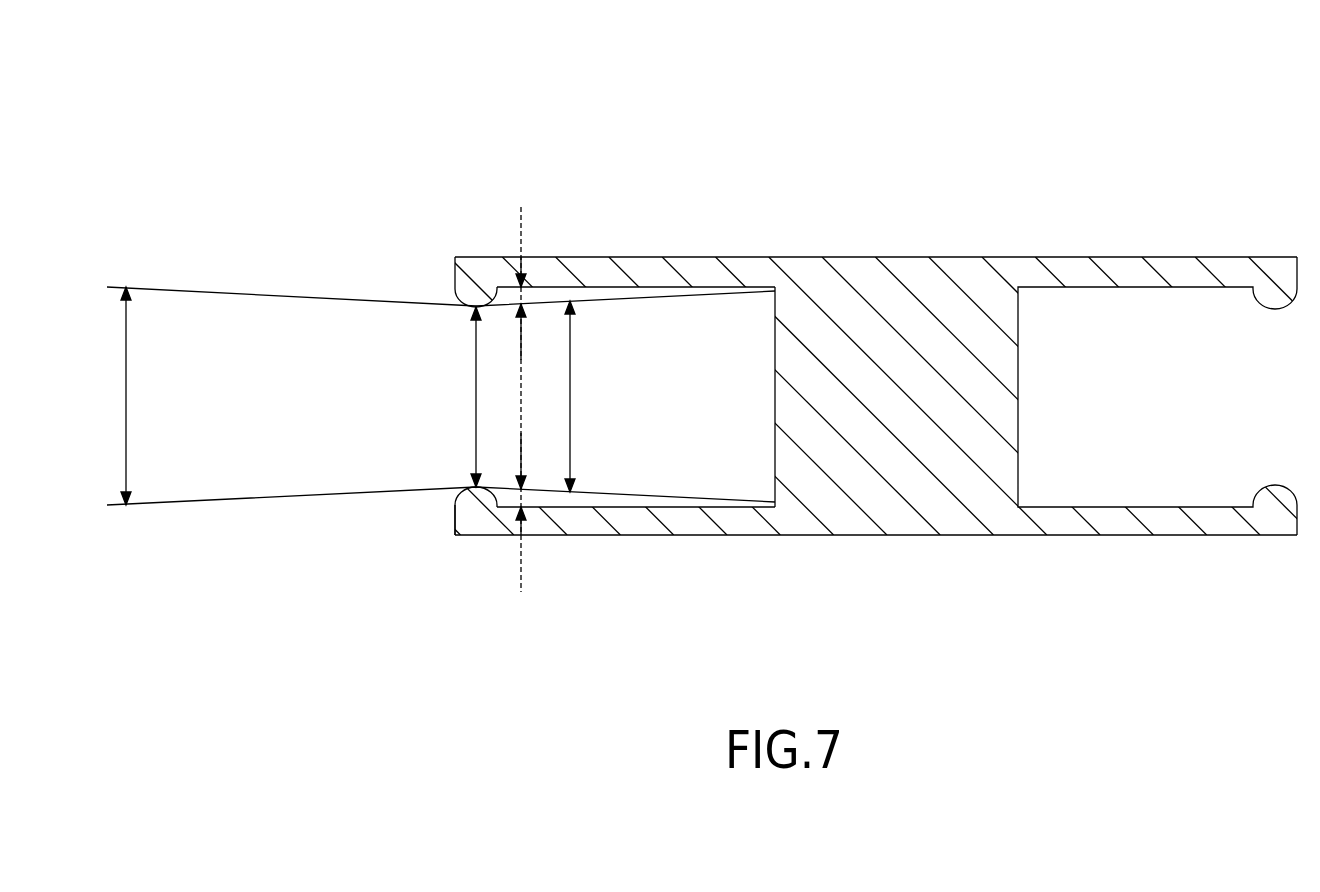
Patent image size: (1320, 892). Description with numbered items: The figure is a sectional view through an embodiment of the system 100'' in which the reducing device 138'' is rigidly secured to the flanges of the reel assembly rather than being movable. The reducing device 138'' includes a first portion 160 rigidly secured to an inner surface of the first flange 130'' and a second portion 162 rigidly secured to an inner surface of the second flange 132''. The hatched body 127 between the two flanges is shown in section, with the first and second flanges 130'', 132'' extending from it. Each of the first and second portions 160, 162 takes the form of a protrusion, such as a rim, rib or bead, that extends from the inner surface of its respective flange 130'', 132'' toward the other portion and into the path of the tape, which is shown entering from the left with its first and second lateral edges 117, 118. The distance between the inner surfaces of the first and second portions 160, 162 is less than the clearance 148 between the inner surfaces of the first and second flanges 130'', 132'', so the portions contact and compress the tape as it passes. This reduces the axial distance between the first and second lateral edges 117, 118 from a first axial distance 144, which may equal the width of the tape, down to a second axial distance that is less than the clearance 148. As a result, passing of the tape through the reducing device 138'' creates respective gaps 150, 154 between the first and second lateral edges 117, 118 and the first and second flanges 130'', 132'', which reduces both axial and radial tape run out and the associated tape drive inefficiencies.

The system 100'' is at (1157, 276).
The first lateral edge 117 is at (260, 287).
The second lateral edge 118 is at (249, 500).
The fitting body 127 is at (877, 507).
The first flange 130'' is at (876, 243).
The second flange 132'' is at (876, 566).
The reducing device 138'' is at (406, 518).
The first axial distance 144 is at (127, 398).
The clearance 148 is at (571, 392).
The gap 150 is at (520, 240).
The gap 154 is at (518, 556).
The first portion 160 is at (455, 289).
The second portion 162 is at (455, 507).